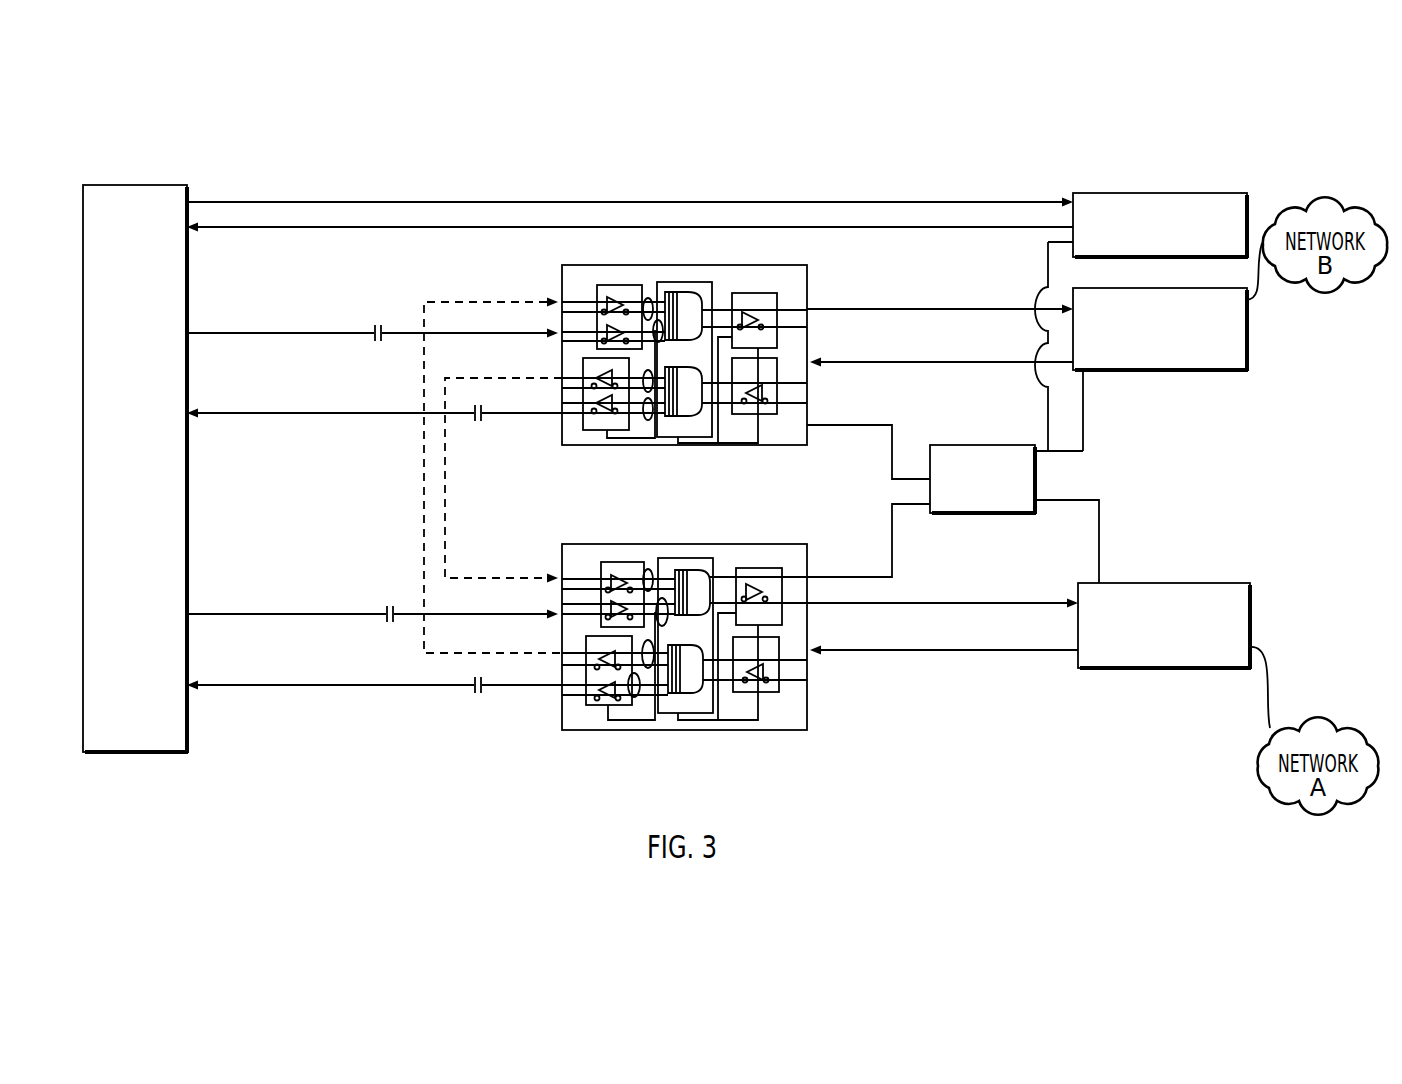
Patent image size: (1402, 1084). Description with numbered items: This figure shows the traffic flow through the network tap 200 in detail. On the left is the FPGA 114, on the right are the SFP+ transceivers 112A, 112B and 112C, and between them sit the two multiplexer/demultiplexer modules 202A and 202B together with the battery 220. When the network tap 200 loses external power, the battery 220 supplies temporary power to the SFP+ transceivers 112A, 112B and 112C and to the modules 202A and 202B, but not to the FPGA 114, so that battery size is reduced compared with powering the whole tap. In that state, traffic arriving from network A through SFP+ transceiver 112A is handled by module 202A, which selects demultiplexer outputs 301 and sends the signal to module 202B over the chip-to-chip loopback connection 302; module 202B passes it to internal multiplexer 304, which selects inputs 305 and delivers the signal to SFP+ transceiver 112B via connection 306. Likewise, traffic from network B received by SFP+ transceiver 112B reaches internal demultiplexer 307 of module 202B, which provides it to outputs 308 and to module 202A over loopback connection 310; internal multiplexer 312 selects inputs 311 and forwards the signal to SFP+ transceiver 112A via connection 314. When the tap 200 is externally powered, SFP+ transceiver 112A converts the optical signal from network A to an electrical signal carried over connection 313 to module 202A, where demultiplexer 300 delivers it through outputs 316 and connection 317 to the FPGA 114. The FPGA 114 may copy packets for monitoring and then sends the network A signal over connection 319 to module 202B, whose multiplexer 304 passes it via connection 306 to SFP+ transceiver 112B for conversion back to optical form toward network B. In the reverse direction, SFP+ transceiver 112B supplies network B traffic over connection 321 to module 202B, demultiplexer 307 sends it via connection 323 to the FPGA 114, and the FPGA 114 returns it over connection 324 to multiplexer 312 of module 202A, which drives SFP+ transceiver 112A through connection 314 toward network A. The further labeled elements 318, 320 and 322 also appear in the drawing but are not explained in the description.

The network tap 200 is at (371, 92).
The FPGA 114 is at (136, 203).
The SFP+ transceiver 112A is at (1250, 600).
The SFP+ transceiver 112B is at (1247, 347).
The SFP+ transceiver 112C is at (1170, 193).
The multiplexer/demultiplexer module 202A is at (709, 639).
The multiplexer/demultiplexer module 202B is at (656, 314).
The battery 220 is at (970, 445).
The demultiplexer 300 is at (703, 657).
The demultiplexer outputs 301 is at (652, 668).
The chip-to-chip loopback connection 302 is at (424, 482).
The internal multiplexer 304 is at (697, 292).
The inputs 305 is at (658, 320).
The connection 306 is at (853, 308).
The internal demultiplexer 307 is at (697, 382).
The outputs 308 is at (646, 378).
The chip-to-chip loopback connection 310 is at (445, 542).
The inputs 311 is at (646, 570).
The internal multiplexer 312 is at (695, 570).
The connection 313 is at (1020, 652).
The connection 314 is at (1012, 603).
The outputs 316 is at (636, 698).
The connection 317 is at (403, 686).
The coupling transformer 318 is at (660, 598).
The connection 319 is at (302, 333).
The coupling transformer 320 is at (648, 420).
The connection 321 is at (893, 362).
The coupling transformer 322 is at (650, 298).
The connection 323 is at (327, 413).
The connection 324 is at (290, 614).